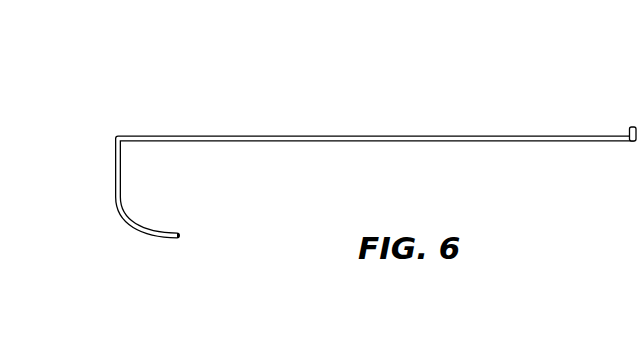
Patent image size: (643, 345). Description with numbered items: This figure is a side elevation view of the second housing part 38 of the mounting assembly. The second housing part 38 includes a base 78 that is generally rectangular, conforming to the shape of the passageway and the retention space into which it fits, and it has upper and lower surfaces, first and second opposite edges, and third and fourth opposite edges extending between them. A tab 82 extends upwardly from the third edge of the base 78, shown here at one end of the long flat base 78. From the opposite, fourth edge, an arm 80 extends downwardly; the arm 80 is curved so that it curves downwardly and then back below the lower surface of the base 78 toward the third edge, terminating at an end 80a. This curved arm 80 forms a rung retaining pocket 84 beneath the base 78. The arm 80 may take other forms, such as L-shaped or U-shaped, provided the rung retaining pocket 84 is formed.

The second housing part 38 is at (267, 122).
The base 78 is at (376, 136).
The arm 80 is at (126, 216).
The end 80a is at (181, 238).
The tab 82 is at (632, 126).
The rung retaining pocket 84 is at (143, 197).